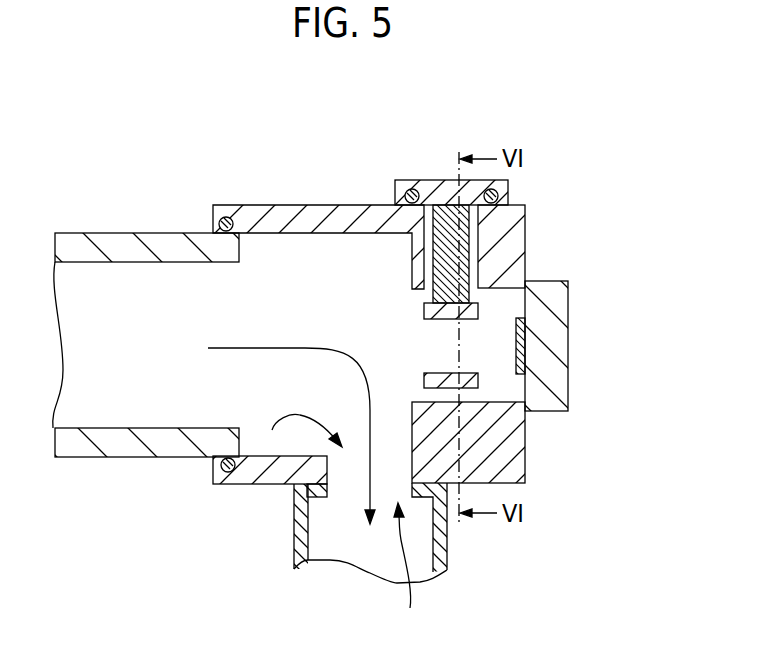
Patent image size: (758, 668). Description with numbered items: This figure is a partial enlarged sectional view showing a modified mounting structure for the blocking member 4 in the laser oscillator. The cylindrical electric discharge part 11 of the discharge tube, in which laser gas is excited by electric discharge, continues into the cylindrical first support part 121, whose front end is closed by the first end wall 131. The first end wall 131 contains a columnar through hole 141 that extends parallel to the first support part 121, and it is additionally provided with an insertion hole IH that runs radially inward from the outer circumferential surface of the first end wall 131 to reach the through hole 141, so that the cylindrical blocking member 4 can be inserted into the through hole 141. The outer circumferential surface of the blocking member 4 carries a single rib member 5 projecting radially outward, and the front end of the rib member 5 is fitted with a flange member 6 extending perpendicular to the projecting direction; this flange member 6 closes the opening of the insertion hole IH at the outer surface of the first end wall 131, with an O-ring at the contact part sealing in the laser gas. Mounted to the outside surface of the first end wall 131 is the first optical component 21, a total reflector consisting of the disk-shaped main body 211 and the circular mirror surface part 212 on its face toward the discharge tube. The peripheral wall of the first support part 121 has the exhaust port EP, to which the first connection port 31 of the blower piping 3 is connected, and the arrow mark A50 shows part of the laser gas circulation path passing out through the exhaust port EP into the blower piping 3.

The electric discharge part 11 is at (132, 243).
The first support part 121 is at (295, 212).
The flange member 6 is at (423, 180).
The first end wall 131 is at (513, 222).
The rib member 5 is at (466, 262).
The insertion hole IH is at (431, 245).
The blocking member 4 is at (480, 312).
The first optical component 21 is at (597, 307).
The main body 211 is at (558, 320).
The mirror surface part 212 is at (520, 355).
The through hole 141 is at (497, 403).
The blower piping 3 is at (452, 560).
The first connection port 31 is at (408, 572).
The arrow mark A50 is at (208, 348).
The exhaust port EP is at (272, 430).